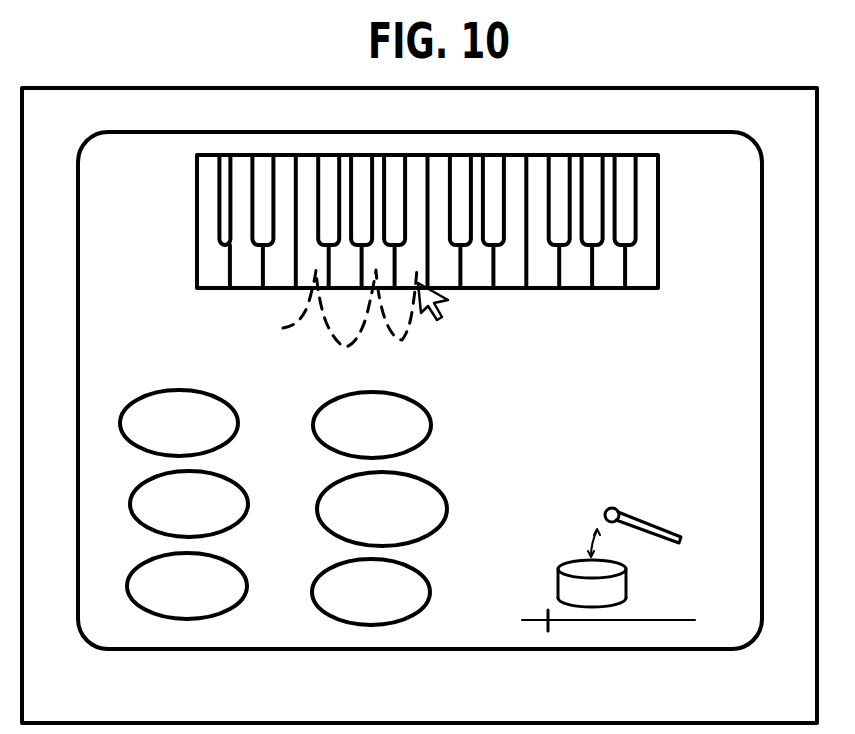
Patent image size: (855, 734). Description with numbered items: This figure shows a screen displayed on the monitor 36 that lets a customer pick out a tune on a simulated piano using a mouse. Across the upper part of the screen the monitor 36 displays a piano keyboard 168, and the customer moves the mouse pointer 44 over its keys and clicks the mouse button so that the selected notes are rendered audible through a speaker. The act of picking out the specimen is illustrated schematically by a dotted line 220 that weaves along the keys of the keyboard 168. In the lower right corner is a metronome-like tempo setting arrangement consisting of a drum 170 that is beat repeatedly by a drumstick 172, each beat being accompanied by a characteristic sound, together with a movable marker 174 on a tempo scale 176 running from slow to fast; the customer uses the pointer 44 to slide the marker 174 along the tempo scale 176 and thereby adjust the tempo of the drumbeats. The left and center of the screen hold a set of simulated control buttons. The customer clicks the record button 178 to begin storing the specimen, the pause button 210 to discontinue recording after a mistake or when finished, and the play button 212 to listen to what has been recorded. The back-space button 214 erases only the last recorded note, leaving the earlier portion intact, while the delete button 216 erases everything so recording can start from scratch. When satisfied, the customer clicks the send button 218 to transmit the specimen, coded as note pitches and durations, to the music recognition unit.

The monitor 36 is at (637, 87).
The piano keyboard 168 is at (187, 242).
The dotted line 220 is at (283, 328).
The pointer 44 is at (455, 303).
The record button 178 is at (188, 388).
The pause button 210 is at (237, 477).
The play button 212 is at (222, 553).
The back-space button 214 is at (432, 423).
The delete button 216 is at (443, 492).
The send button 218 is at (332, 617).
The drum 170 is at (575, 568).
The drumstick 172 is at (652, 522).
The tempo scale 176 is at (655, 592).
The marker 174 is at (555, 623).